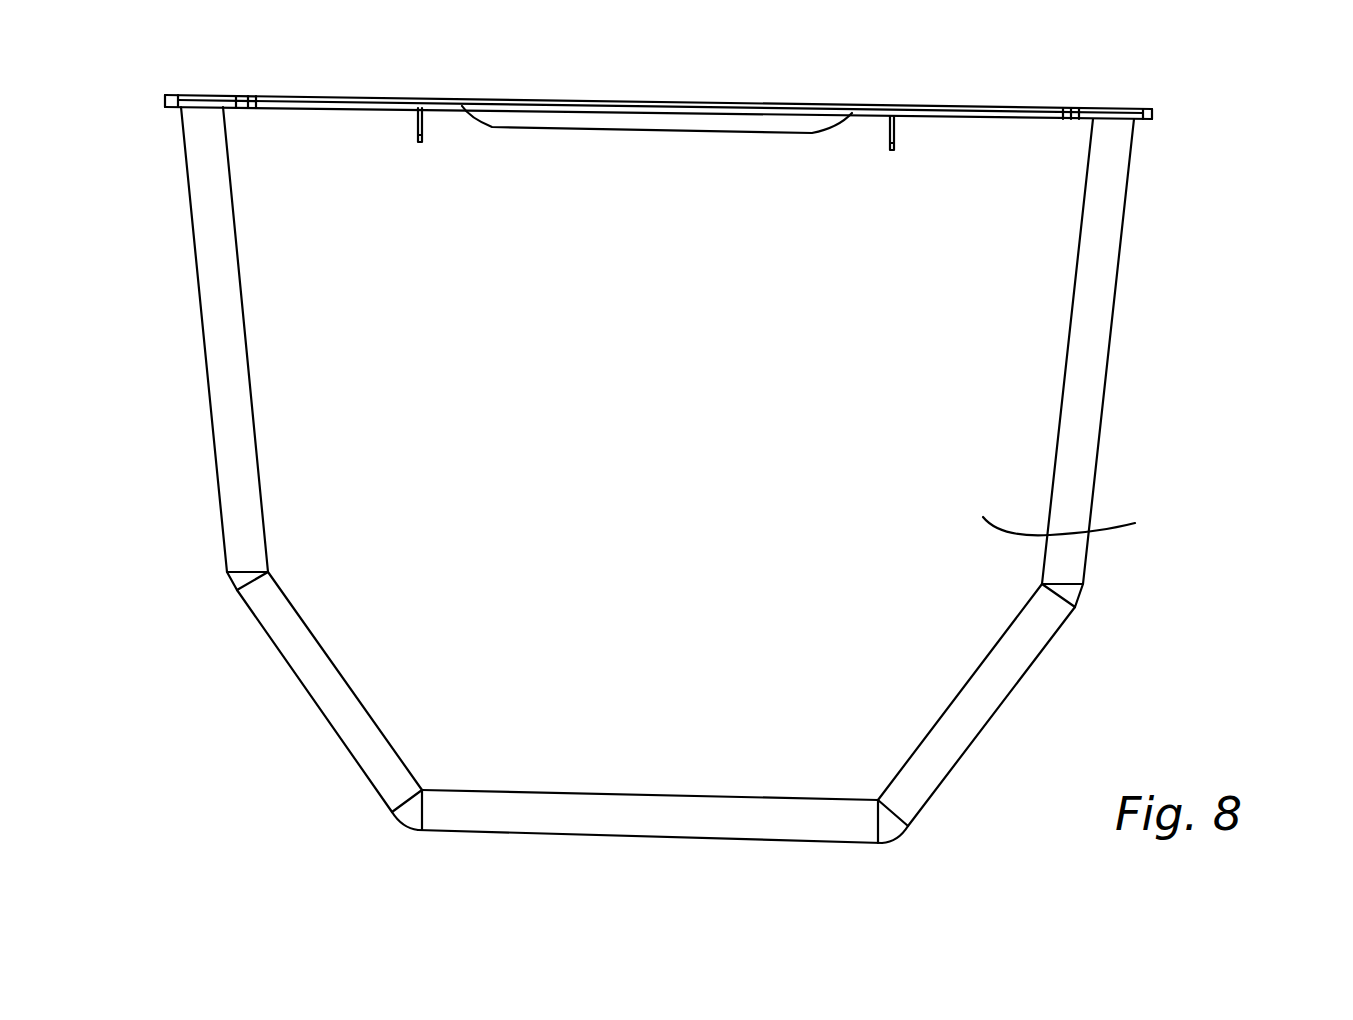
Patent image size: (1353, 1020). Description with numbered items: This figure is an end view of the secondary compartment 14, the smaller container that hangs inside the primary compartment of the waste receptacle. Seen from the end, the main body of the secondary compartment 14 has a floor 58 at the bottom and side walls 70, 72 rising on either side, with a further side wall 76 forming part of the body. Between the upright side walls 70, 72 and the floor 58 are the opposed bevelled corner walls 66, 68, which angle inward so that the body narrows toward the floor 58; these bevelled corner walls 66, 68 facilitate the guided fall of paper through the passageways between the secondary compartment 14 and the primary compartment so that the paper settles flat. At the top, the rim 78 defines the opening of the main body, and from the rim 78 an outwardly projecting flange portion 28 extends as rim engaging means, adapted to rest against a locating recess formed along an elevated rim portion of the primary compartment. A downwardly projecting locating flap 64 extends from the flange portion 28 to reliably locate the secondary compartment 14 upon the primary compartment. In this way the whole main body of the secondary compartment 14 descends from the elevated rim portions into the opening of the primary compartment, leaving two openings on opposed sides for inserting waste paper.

The secondary compartment 14 is at (1207, 678).
The outwardly projecting flange portion 28 is at (643, 98).
The floor 58 is at (694, 838).
The locating flap 64 is at (550, 120).
The bevelled corner wall 66 is at (308, 697).
The bevelled corner wall 68 is at (997, 712).
The side wall 70 is at (207, 370).
The side wall 72 is at (1110, 372).
The side wall 76 is at (1085, 522).
The rim 78 is at (1093, 105).